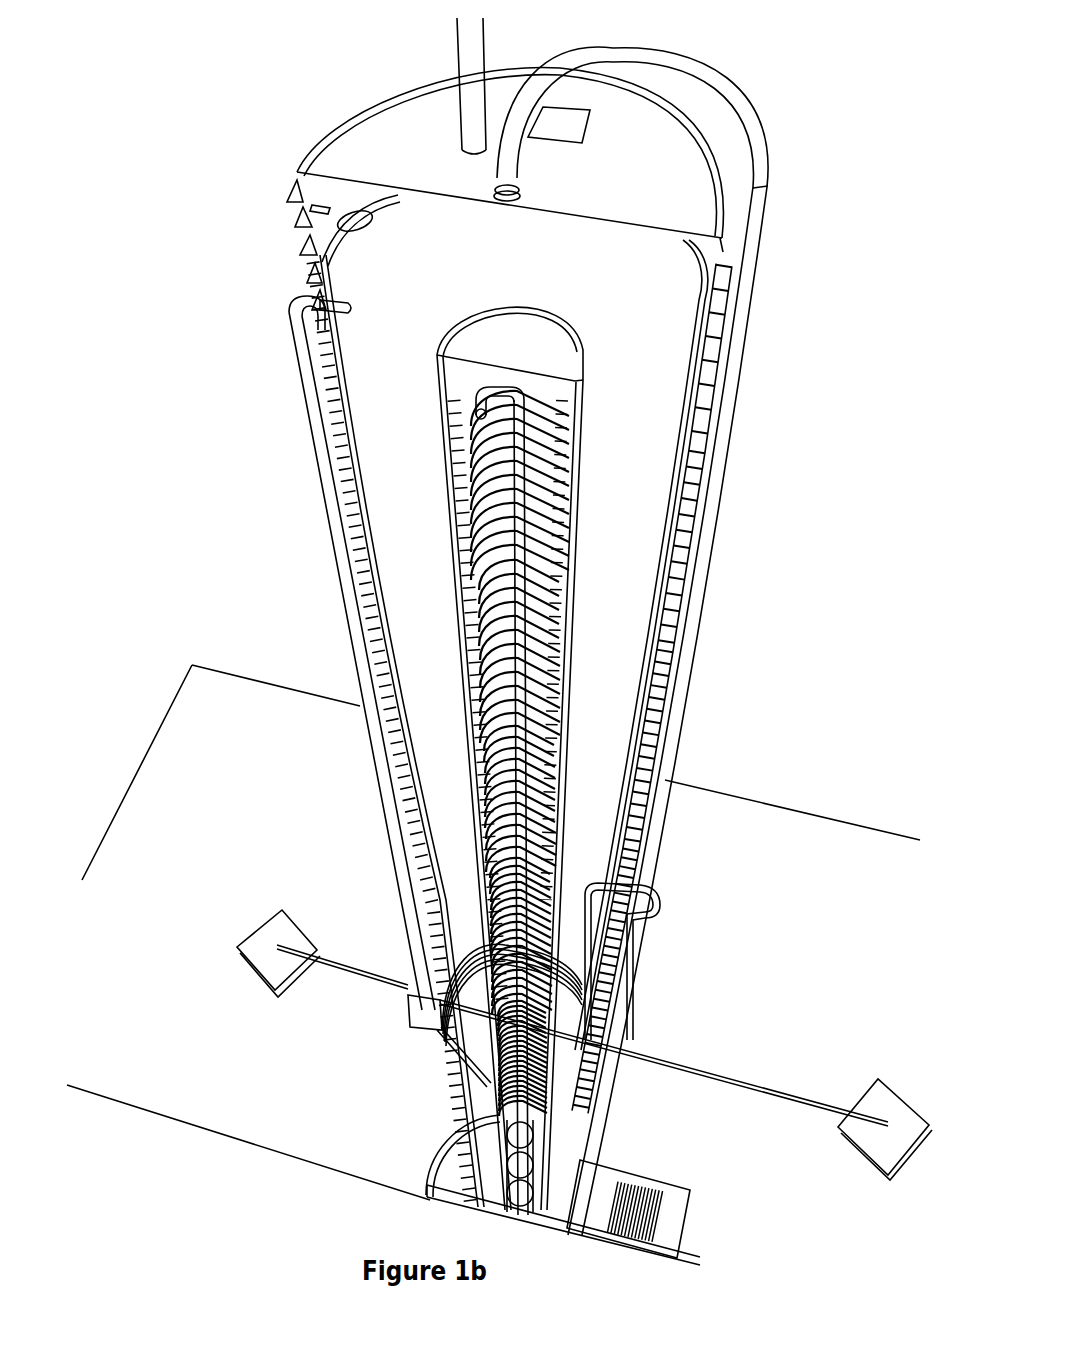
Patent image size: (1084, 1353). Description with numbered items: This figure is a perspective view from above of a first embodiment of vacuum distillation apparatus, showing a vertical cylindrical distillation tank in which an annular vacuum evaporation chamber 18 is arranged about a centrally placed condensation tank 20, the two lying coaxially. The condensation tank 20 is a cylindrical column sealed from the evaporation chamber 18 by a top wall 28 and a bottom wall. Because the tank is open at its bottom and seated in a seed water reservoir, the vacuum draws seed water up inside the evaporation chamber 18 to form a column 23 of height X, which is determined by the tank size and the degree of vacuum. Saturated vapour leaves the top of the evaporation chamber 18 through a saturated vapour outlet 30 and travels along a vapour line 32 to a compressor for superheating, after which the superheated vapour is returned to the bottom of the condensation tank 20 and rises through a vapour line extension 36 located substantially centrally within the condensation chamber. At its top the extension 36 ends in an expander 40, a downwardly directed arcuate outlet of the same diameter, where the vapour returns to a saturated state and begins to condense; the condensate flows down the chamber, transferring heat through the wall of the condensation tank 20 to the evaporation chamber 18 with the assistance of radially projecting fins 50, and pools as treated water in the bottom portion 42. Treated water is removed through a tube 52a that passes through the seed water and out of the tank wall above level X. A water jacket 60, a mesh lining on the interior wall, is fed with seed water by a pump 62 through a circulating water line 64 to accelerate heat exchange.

The vacuum evaporation chamber 18 is at (656, 280).
The condensation tank 20 is at (572, 584).
The column 23 is at (490, 1115).
The top wall 28 is at (537, 360).
The saturated vapour outlet 30 is at (526, 192).
The vapour line 32 is at (685, 60).
The vapour line extension 36 is at (520, 665).
The expander 40 is at (475, 410).
The bottom portion 42 is at (510, 1170).
The radially projecting fins 50 is at (563, 440).
The tube 52a is at (612, 1008).
The water jacket 60 is at (335, 210).
The pump 62 is at (412, 1017).
The circulating water line 64 is at (355, 625).
The height X is at (580, 1044).